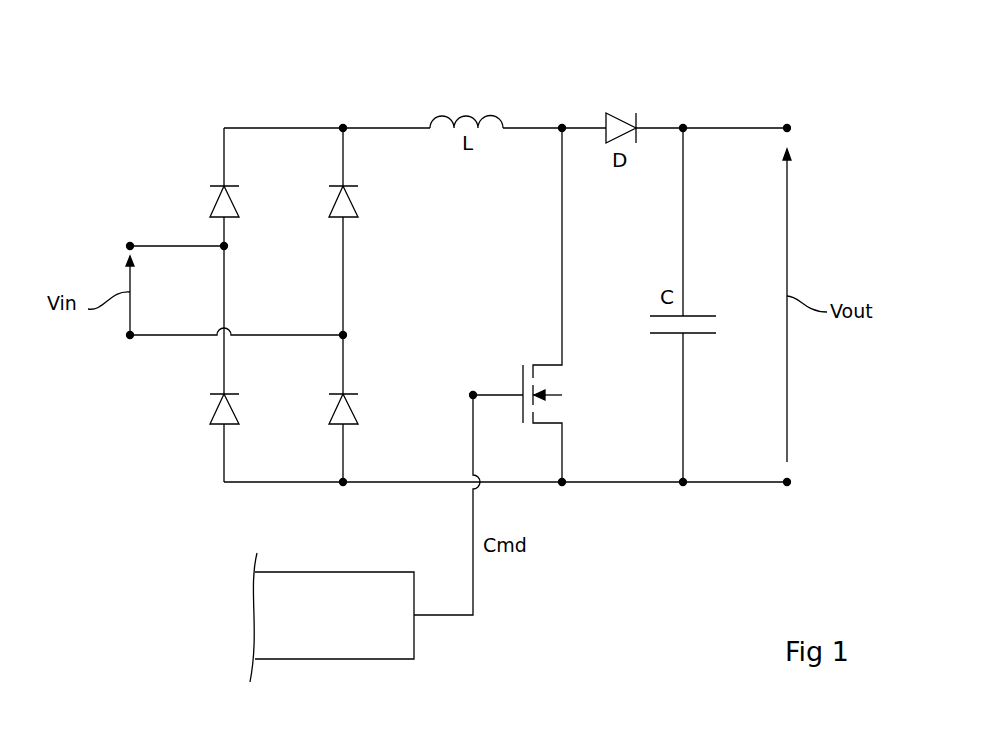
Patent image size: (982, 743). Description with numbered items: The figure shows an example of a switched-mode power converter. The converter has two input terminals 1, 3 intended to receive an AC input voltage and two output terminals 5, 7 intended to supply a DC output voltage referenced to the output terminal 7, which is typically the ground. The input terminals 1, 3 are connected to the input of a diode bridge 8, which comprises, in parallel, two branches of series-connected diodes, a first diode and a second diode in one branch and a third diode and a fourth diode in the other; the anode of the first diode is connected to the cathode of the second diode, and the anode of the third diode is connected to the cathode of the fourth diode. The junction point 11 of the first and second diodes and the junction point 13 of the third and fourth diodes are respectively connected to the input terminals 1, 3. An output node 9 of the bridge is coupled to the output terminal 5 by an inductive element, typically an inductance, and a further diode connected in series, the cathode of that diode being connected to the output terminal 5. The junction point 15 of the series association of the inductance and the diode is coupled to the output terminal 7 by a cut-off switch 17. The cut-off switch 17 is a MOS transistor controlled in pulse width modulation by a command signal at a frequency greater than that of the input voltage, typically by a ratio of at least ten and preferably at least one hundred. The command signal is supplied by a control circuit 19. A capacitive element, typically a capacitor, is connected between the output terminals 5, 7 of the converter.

The input terminal 1 is at (128, 244).
The input terminal 3 is at (128, 336).
The output terminal 5 is at (789, 126).
The output terminal 7 is at (789, 482).
The diode bridge 8 is at (277, 113).
The output node 9 is at (345, 126).
The junction point 11 is at (226, 247).
The junction point 13 is at (345, 335).
The junction point 15 is at (563, 126).
The cut-off switch 17 is at (542, 356).
The control circuit 19 is at (360, 578).